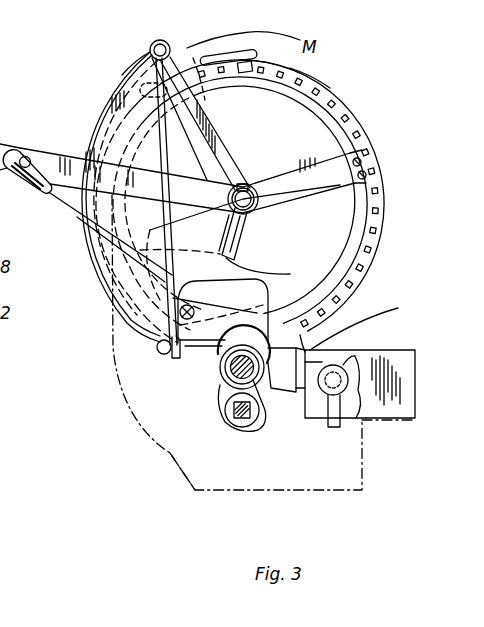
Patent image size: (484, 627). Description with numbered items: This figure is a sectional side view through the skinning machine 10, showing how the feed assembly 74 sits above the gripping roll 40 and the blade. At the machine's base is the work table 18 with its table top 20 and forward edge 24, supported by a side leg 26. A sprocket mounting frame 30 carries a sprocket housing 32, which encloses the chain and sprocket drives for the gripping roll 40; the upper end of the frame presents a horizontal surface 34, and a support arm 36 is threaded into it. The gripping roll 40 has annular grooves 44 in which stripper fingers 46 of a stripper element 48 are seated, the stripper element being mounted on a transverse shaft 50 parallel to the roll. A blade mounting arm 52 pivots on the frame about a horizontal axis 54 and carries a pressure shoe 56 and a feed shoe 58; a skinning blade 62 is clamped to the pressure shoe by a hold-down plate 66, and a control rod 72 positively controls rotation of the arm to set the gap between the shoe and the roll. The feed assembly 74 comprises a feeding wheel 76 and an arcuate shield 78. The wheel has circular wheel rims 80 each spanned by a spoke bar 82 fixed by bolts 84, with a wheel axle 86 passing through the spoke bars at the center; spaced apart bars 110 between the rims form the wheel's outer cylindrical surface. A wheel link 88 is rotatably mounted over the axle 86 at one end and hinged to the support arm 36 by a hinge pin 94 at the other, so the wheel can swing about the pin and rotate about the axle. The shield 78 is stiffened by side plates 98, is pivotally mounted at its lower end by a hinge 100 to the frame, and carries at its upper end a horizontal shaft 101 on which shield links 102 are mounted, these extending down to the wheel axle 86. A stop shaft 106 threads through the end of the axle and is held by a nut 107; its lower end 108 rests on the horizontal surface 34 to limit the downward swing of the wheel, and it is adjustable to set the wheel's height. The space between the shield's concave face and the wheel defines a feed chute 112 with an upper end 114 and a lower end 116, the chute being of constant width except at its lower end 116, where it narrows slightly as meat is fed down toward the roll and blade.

The skinning machine 10 is at (331, 35).
The work table 18 is at (380, 352).
The table top 20 is at (11, 290).
The forward edge 24 is at (373, 318).
The side leg 26 is at (392, 415).
The sprocket mounting frame 30 is at (110, 298).
The sprocket housing 32 is at (167, 453).
The horizontal surface 34 is at (165, 280).
The support arm 36 is at (57, 228).
The gripping roll 40 is at (260, 209).
The annular grooves 44 is at (220, 366).
The stripper fingers 46 is at (224, 393).
The stripper element 48 is at (232, 413).
The transverse shaft 50 is at (236, 420).
The blade mounting arm 52 is at (324, 353).
The pivotal axis 54 is at (183, 307).
The pressure shoe 56 is at (287, 393).
The feed shoe 58 is at (171, 357).
The skinning blade 62 is at (268, 310).
The hold-down plate 66 is at (322, 309).
The control rod 72 is at (342, 420).
The feed assembly 74 is at (136, 52).
The feeding wheel 76 is at (300, 63).
The arcuate shield 78 is at (108, 94).
The circular wheel rim 80 is at (313, 78).
The spoke bar 82 is at (272, 175).
The bolts 84 is at (372, 160).
The wheel axle 86 is at (252, 220).
The wheel link 88 is at (66, 126).
The hinge pin 94 is at (40, 194).
The side plate 98 is at (127, 113).
The hinge 100 is at (152, 335).
The horizontal shaft 101 is at (155, 38).
The shield link 102 is at (218, 130).
The stop shaft 106 is at (240, 240).
The nut 107 is at (258, 206).
The lower end 108 is at (236, 258).
The spaced apart bars 110 is at (190, 42).
The feed chute 112 is at (150, 58).
The upper end 114 is at (193, 58).
The lower end 116 is at (157, 350).